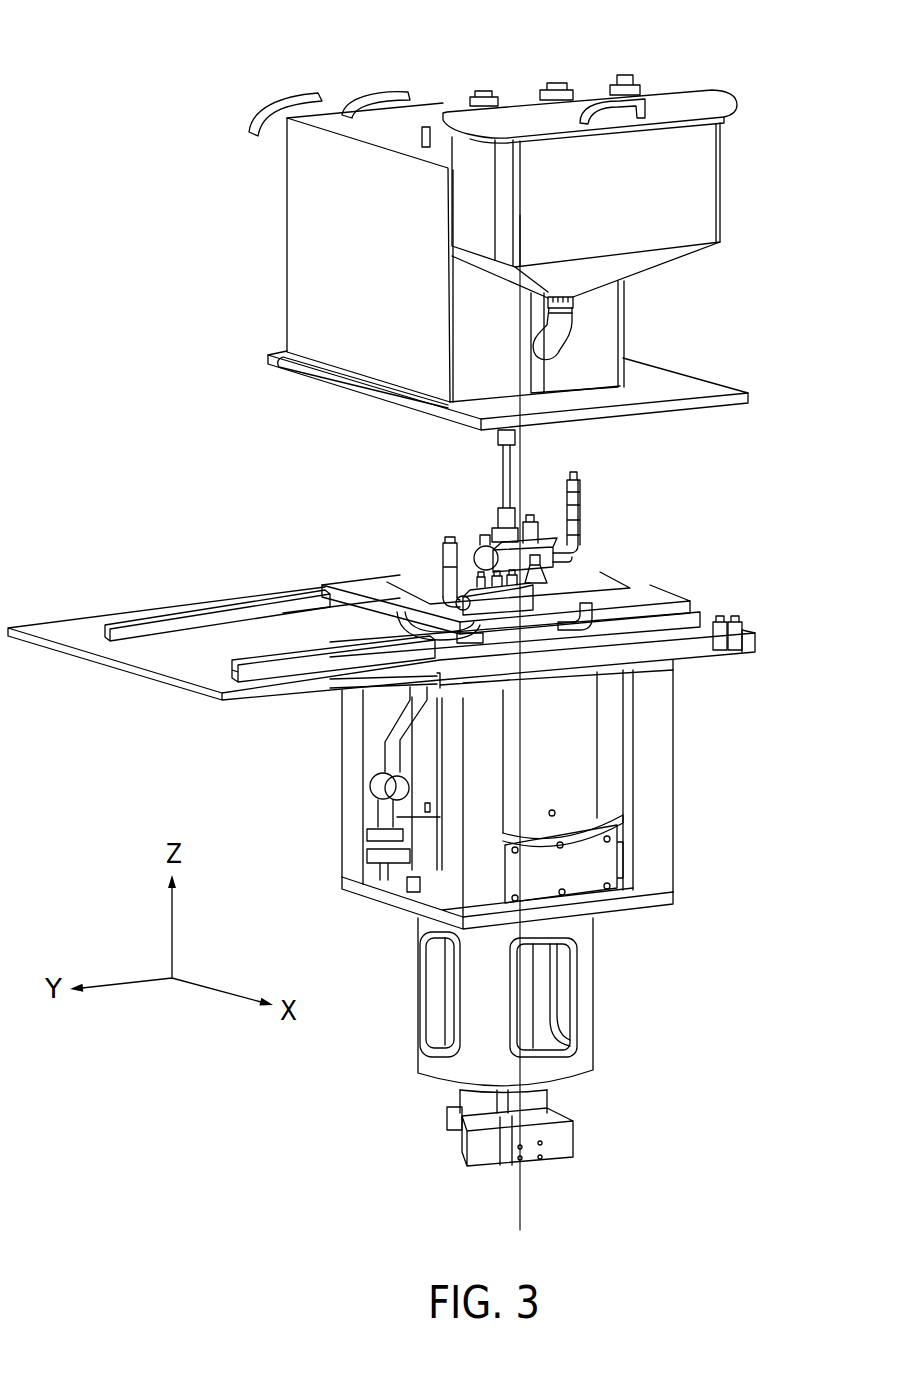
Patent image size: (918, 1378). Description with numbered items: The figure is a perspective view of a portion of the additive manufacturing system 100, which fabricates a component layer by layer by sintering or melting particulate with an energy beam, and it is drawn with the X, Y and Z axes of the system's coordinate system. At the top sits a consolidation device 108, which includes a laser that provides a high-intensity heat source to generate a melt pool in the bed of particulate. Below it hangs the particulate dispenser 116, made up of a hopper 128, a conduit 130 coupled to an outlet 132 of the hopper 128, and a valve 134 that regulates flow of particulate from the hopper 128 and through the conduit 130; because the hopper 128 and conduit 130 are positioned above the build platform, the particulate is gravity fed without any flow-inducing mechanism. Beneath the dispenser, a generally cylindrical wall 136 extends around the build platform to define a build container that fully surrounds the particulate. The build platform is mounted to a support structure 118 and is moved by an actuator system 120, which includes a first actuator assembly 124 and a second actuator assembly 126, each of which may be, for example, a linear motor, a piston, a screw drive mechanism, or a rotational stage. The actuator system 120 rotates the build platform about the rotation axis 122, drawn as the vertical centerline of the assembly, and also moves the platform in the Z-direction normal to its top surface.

The additive manufacturing system 100 is at (700, 58).
The consolidation device 108 is at (320, 236).
The particulate dispenser 116 is at (478, 480).
The support structure 118 is at (583, 1025).
The actuator system 120 is at (570, 1175).
The rotation axis 122 is at (518, 1200).
The first actuator assembly 124 is at (590, 868).
The second actuator assembly 126 is at (575, 1125).
The hopper 128 is at (668, 184).
The conduit 130 is at (568, 328).
The outlet 132 is at (560, 298).
The valve 134 is at (527, 447).
The wall 136 is at (580, 752).